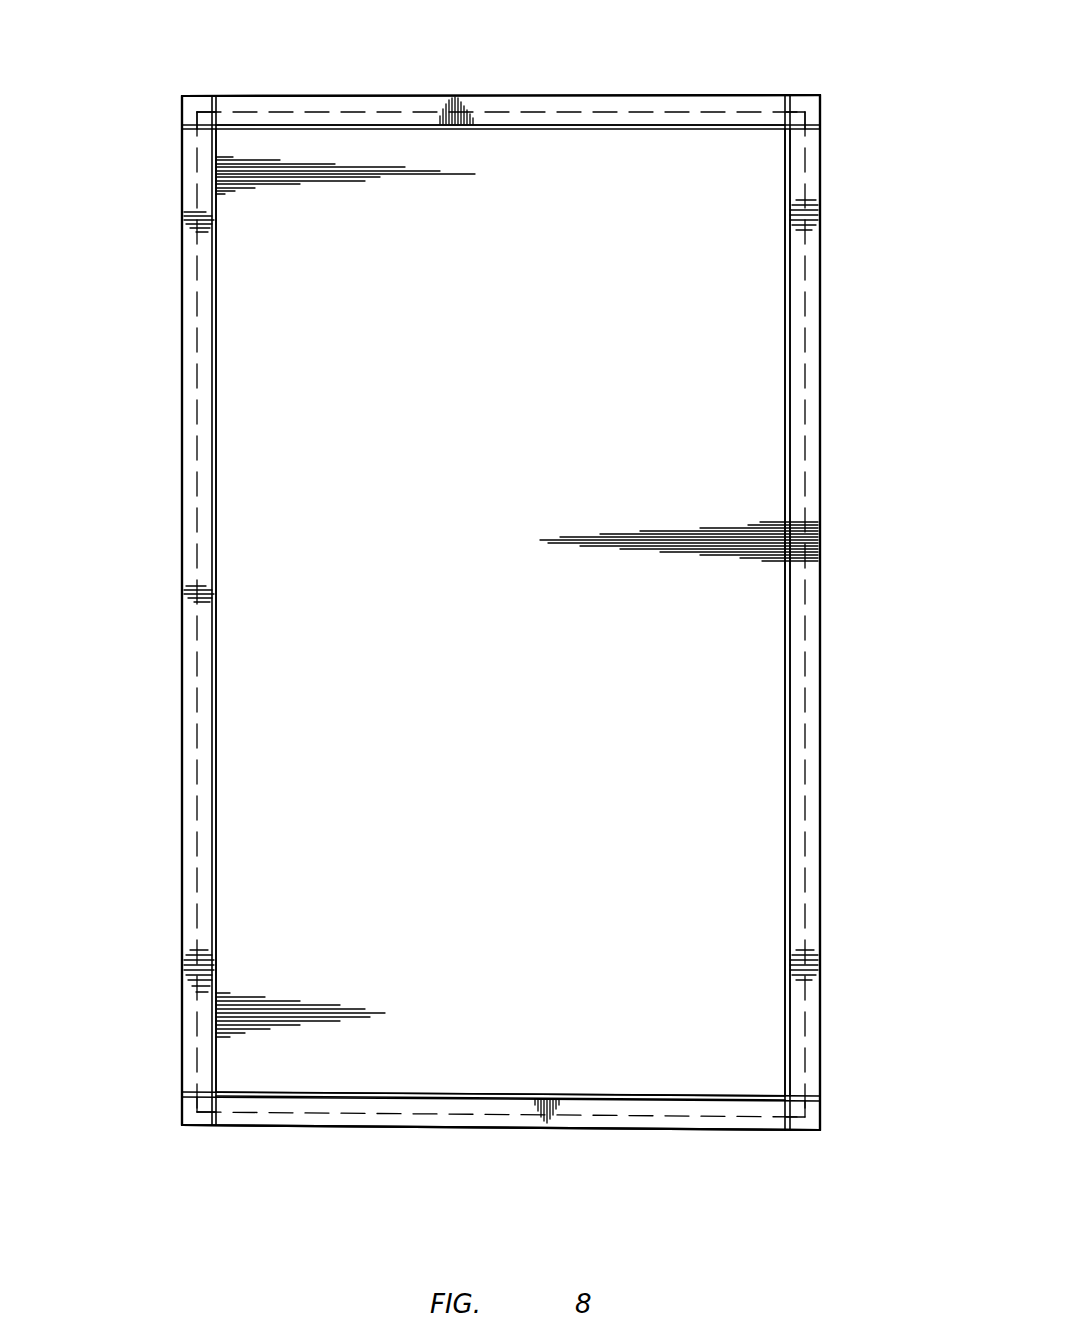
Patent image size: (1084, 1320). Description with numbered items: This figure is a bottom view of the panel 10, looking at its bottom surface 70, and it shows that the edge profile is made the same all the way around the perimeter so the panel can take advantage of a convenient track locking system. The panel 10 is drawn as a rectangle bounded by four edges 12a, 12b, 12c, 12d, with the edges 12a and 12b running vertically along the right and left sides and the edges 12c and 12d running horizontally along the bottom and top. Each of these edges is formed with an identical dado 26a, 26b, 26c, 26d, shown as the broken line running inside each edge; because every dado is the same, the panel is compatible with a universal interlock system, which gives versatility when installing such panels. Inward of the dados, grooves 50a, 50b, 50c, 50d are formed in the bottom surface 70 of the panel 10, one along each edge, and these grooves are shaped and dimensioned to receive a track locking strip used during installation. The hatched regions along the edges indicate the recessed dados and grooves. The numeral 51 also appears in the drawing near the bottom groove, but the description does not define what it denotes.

The panel 10 is at (167, 58).
The edge 12a is at (820, 379).
The edge 12b is at (183, 372).
The edge 12c is at (340, 1130).
The edge 12d is at (340, 97).
The dado 26a is at (806, 502).
The dado 26b is at (197, 497).
The dado 26c is at (520, 1115).
The dado 26d is at (518, 110).
The groove 50a is at (793, 650).
The groove 50b is at (207, 643).
The groove 50c is at (718, 1100).
The groove 50d is at (718, 120).
The inner flange edge 51 is at (440, 1205).
The bottom surface 70 is at (755, 1015).